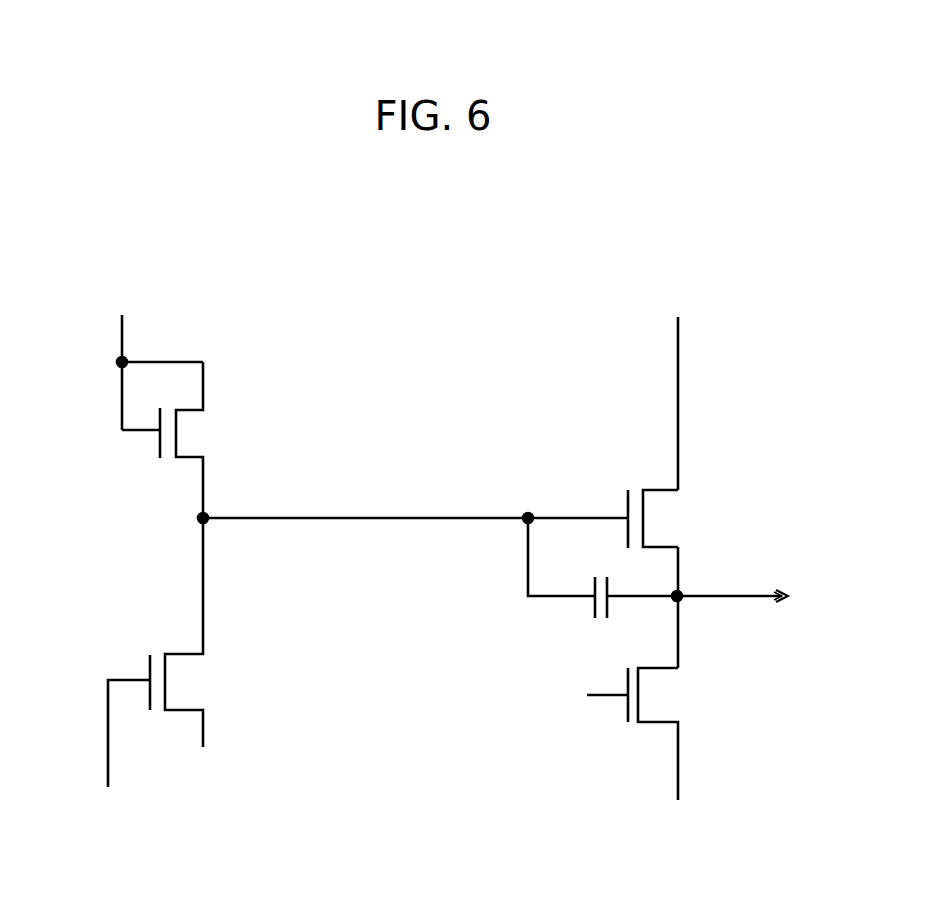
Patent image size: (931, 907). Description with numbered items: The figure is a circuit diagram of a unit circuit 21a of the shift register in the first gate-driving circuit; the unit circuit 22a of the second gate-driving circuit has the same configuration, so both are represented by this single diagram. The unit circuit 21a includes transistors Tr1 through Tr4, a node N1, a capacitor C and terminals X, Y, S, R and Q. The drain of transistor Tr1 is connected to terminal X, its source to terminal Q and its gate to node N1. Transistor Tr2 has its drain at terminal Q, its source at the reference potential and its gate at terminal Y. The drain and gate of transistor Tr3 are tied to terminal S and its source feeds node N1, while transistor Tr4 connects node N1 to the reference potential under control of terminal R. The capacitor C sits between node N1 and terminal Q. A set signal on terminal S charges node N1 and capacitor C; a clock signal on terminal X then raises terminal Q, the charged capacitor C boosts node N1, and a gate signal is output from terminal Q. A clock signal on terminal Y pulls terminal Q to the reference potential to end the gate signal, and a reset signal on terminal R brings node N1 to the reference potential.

The unit circuit 21a is at (436, 534).
The unit circuit 22a is at (153, 253).
The transistor Tr1 is at (625, 480).
The transistor Tr2 is at (620, 722).
The transistor Tr3 is at (212, 437).
The transistor Tr4 is at (153, 643).
The node N1 is at (522, 511).
The capacitor C is at (573, 618).